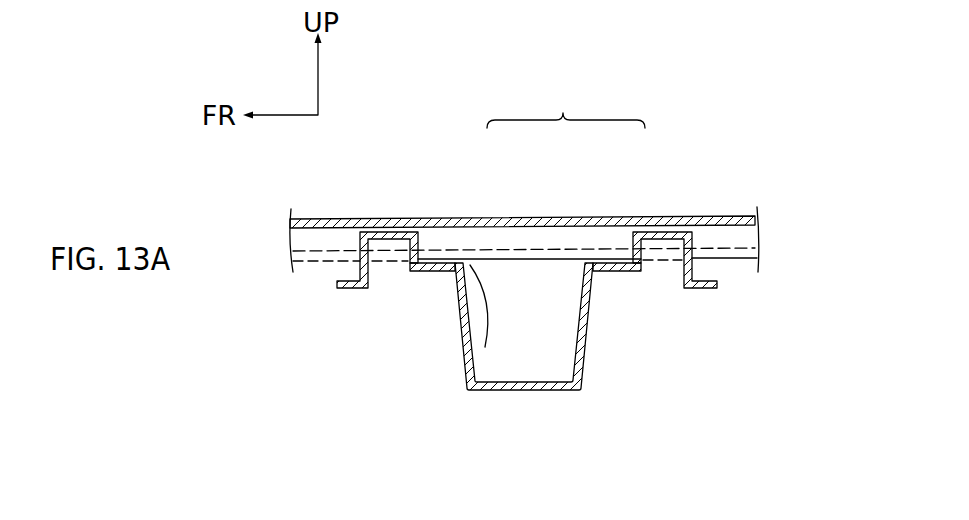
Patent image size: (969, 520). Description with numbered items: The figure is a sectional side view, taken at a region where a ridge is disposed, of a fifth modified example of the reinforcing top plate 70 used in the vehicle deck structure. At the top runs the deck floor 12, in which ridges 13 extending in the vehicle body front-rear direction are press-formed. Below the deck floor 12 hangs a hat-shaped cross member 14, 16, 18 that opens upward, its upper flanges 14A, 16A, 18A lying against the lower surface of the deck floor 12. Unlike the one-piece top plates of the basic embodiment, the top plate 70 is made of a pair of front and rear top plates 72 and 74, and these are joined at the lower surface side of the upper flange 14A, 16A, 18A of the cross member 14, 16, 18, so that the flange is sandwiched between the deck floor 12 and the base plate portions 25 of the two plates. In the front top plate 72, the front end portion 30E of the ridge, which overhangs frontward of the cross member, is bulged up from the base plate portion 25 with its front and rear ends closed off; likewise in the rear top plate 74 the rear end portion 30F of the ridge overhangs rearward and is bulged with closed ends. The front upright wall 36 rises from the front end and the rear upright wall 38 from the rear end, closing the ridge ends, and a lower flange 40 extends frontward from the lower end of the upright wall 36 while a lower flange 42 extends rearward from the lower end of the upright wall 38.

The deck floor 12 is at (735, 210).
The ridges 13 is at (713, 237).
The cross member 14 is at (526, 384).
The cross member 16 is at (526, 384).
The cross member 18 is at (569, 392).
The upper flange 14A is at (482, 368).
The upper flange 16A is at (482, 368).
The upper flange 18A is at (583, 265).
The base plate portion 25 is at (415, 273).
The front end portion of the ridge 30E is at (388, 229).
The rear end portion of the ridge 30F is at (652, 230).
The upright wall 36 is at (352, 273).
The upright wall 38 is at (700, 272).
The lower flange 40 is at (353, 288).
The lower flange 42 is at (694, 285).
The top plate 70 is at (539, 220).
The front top plate 72 is at (424, 242).
The rear top plate 74 is at (625, 240).